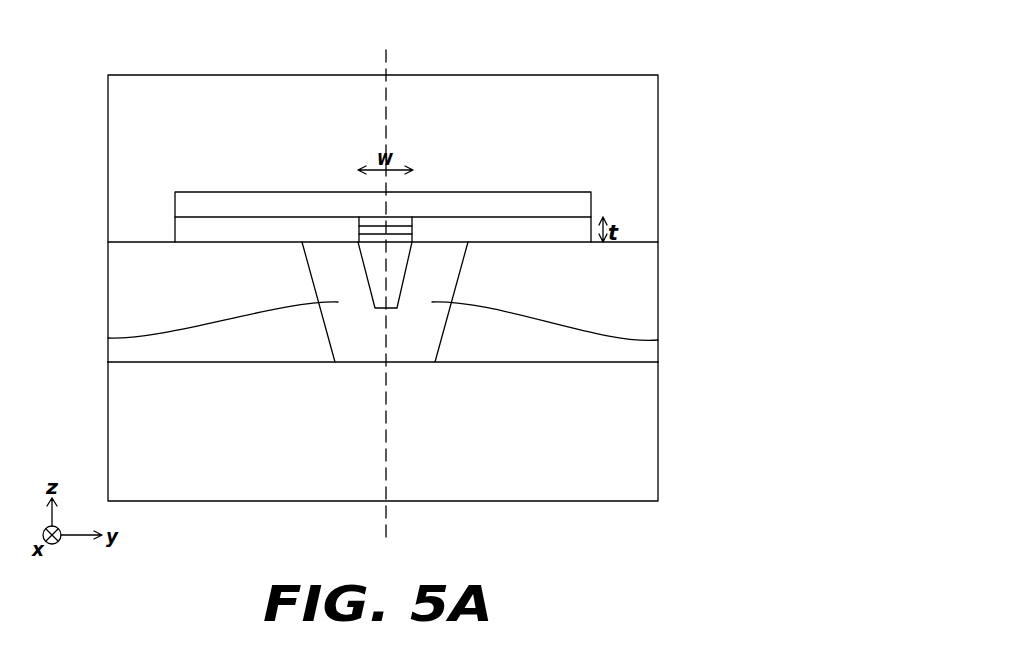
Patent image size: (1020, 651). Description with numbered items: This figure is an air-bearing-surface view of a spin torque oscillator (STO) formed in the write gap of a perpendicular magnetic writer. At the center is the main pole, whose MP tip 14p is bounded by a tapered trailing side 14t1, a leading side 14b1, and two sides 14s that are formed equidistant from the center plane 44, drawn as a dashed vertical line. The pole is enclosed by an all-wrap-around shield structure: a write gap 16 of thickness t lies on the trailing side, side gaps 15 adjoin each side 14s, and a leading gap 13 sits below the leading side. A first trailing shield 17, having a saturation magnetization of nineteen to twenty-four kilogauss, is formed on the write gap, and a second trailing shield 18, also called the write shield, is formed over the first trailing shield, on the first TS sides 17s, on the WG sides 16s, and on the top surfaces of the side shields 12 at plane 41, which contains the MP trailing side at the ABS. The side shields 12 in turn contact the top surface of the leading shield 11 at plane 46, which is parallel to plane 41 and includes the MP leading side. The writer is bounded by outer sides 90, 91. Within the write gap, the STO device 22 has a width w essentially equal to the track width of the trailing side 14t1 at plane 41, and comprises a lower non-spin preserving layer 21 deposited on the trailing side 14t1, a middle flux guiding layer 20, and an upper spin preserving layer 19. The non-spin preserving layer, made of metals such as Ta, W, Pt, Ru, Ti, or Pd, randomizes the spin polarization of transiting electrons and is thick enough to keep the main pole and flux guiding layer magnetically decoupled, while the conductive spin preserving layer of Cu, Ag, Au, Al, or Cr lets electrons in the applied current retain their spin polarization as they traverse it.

The leading shield 11 is at (118, 437).
The side shield 12 is at (647, 314).
The leading gap 13 is at (352, 347).
The leading side 14b1 is at (375, 308).
The MP tip 14p is at (397, 270).
The sides 14s is at (397, 308).
The trailing side 14t1 is at (377, 242).
The side gaps 15 is at (658, 340).
The write gap 16 is at (240, 232).
The WG sides 16s is at (175, 225).
The first TS 17 is at (202, 207).
The first TS sides 17s is at (175, 199).
The second TS 18 is at (645, 120).
The upper spin preserving layer 19 is at (412, 218).
The middle flux guiding layer 20 is at (412, 227).
The lower non-spin preserving layer 21 is at (412, 237).
The STO device 22 is at (492, 36).
The plane 41- 41 is at (681, 242).
The center plane 44 is at (383, 297).
The plane 46- 46 is at (681, 362).
The outer side 90 is at (108, 267).
The outer side 91 is at (658, 260).